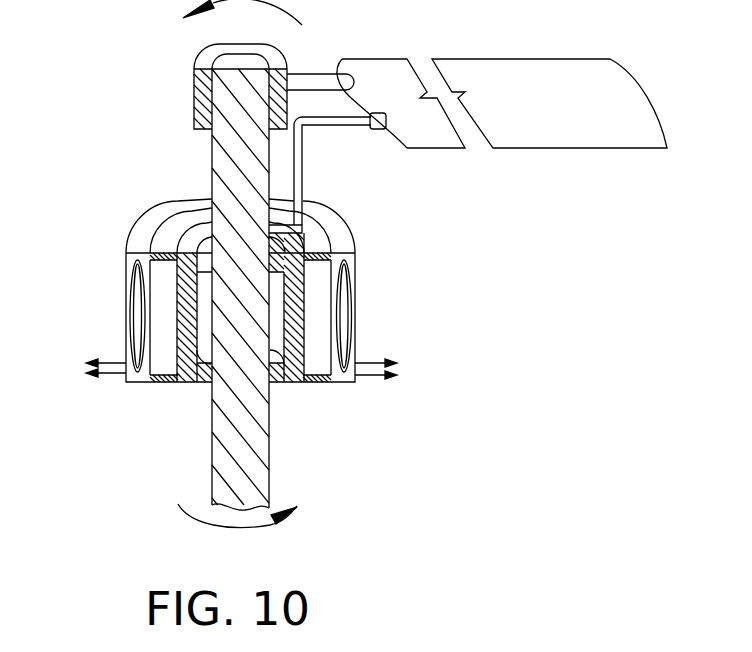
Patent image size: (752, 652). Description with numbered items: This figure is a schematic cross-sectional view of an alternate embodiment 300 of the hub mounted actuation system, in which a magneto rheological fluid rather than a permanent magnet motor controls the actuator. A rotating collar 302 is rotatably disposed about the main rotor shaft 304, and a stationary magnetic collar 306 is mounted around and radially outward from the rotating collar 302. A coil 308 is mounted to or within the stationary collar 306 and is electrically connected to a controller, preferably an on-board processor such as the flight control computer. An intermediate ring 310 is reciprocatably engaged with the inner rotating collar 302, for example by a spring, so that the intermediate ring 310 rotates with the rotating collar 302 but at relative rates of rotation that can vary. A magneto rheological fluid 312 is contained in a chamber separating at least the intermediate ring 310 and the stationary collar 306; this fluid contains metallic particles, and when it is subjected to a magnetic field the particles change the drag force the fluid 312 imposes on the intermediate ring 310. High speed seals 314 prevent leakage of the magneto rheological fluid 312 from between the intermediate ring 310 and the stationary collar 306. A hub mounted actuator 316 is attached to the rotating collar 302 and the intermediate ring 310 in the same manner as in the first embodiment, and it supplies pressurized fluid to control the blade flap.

The alternate embodiment 300 is at (418, 336).
The rotating collar 302 is at (198, 383).
The main rotor shaft 304 is at (269, 438).
The stationary magnetic collar 306 is at (338, 238).
The coil 308 is at (343, 331).
The intermediate ring 310 is at (302, 199).
The magneto rheological fluid 312 is at (162, 373).
The high speed seals 314 is at (308, 382).
The hub mounted actuator 316 is at (270, 216).